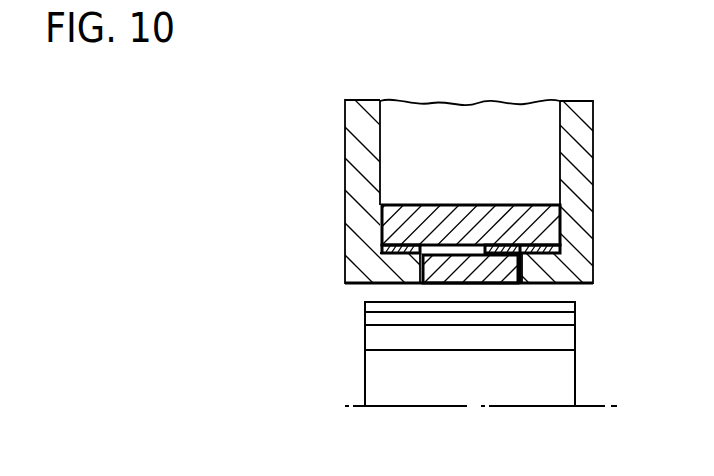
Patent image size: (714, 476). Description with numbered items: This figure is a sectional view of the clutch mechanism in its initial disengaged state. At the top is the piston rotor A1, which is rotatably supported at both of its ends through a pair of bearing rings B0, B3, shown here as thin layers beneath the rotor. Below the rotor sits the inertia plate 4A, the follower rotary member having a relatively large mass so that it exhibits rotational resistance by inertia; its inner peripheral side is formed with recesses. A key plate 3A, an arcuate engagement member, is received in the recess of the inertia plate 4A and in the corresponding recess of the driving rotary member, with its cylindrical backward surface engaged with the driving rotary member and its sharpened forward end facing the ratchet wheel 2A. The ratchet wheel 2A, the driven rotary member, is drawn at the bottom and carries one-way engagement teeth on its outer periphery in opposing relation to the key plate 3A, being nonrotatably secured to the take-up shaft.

The piston rotor A1 is at (425, 198).
The inertia plate 4A is at (503, 228).
The bearing ring B3 is at (408, 246).
The bearing ring B0 is at (547, 245).
The key plate 3A is at (457, 273).
The ratchet wheel 2A is at (563, 359).